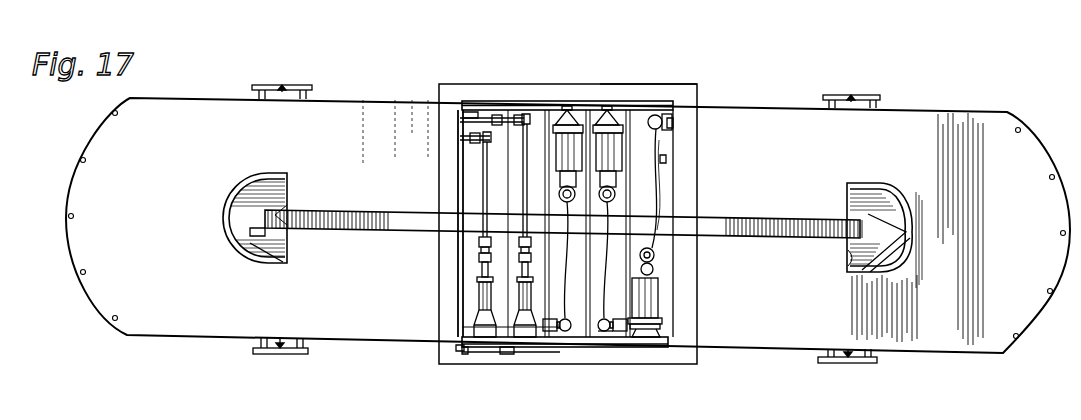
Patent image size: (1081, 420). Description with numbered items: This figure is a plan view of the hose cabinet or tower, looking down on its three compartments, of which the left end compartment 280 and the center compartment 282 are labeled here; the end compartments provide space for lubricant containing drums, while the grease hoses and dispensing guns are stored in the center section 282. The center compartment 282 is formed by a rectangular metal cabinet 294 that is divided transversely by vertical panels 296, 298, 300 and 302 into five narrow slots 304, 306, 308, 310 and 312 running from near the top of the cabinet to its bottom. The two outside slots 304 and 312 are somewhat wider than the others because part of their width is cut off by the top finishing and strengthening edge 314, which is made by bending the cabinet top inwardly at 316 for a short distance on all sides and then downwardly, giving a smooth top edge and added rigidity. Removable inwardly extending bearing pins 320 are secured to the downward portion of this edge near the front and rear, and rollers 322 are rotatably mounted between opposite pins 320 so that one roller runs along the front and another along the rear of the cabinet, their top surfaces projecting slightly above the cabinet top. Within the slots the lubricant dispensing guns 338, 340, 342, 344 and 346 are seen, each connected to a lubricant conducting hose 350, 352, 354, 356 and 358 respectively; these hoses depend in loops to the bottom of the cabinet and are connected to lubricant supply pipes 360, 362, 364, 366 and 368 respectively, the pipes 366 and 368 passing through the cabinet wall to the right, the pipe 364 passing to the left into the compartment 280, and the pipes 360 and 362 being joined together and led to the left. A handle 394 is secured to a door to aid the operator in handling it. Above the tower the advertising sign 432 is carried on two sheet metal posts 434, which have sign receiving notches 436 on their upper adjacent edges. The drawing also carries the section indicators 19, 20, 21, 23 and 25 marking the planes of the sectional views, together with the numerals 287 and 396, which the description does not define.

The end compartment 280 is at (207, 96).
The center compartment 282 is at (470, 83).
The housing top wall 287 is at (798, 108).
The rectangular metal cabinet 294 is at (687, 194).
The vertical panel 296 is at (508, 190).
The vertical panel 298 is at (553, 200).
The vertical panel 300 is at (604, 243).
The vertical panel 302 is at (660, 290).
The slot 304 is at (478, 112).
The slot 306 is at (513, 272).
The slot 308 is at (598, 334).
The slot 310 is at (663, 150).
The slot 312 is at (665, 206).
The top finishing and strengthening edge 314 is at (458, 348).
The inward bend of cabinet top 316 is at (698, 86).
The bearing pins 320 is at (462, 104).
The rollers 322 is at (648, 104).
The lubricant dispensing gun 338 is at (482, 313).
The lubricant dispensing gun 340 is at (507, 349).
The lubricant dispensing gun 342 is at (558, 137).
The lubricant dispensing gun 344 is at (600, 126).
The lubricant dispensing gun 346 is at (663, 310).
The lubricant conducting hose 350 is at (483, 155).
The lubricant conducting hose 352 is at (523, 167).
The lubricant conducting hose 354 is at (480, 305).
The lubricant conducting hose 356 is at (662, 266).
The lubricant conducting hose 358 is at (663, 160).
The lubricant supply pipe 360 is at (463, 137).
The lubricant supply pipe 362 is at (463, 118).
The lubricant supply pipe 364 is at (463, 352).
The lubricant supply pipe 366 is at (665, 330).
The lubricant supply pipe 368 is at (668, 131).
The handle 394 is at (256, 88).
The bolt 396 is at (286, 88).
The sign 432 is at (330, 212).
The posts 434 is at (268, 178).
The sign receiving notches 436 is at (275, 210).
The section line 19 is at (50, 215).
The section line 20 is at (432, 219).
The section line 21 is at (560, 63).
The section line 23 is at (185, 201).
The section line 25 is at (280, 305).